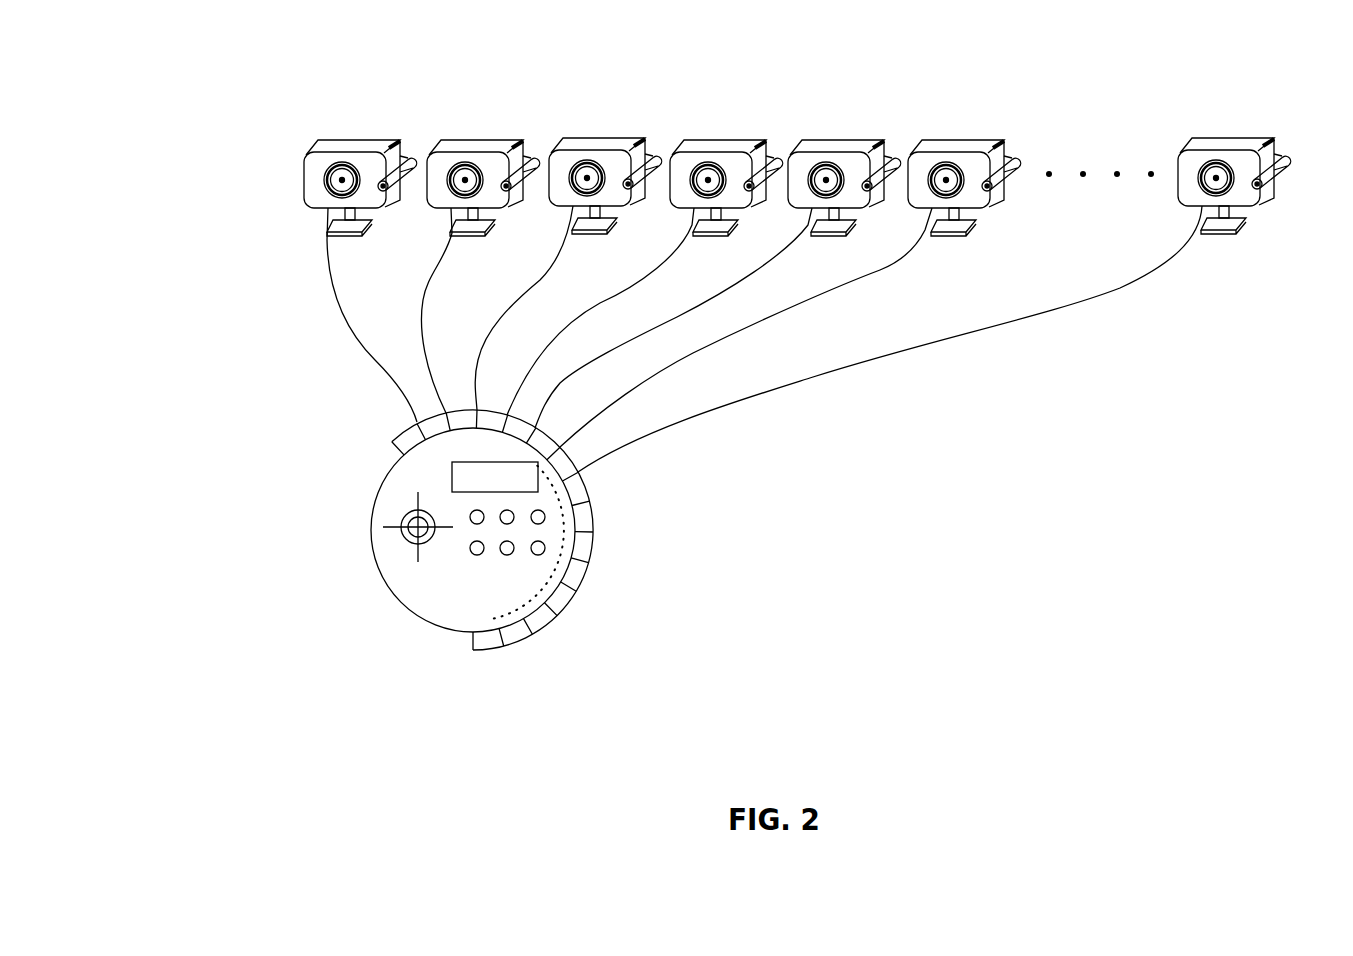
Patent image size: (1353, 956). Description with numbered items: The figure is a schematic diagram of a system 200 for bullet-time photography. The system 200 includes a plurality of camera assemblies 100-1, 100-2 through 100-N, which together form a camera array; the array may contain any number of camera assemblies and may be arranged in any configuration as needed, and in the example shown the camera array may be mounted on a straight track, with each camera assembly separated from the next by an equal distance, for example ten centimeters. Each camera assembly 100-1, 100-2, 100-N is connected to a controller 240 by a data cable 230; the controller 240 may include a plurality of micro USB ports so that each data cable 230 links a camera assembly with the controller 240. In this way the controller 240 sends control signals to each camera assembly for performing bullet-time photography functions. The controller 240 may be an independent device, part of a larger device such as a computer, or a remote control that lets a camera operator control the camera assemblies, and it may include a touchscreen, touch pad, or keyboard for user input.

The system 200 is at (785, 31).
The camera assembly 100-1 is at (360, 146).
The camera assembly 100-2 is at (483, 173).
The camera assembly 100-N is at (1234, 170).
The data cable 230 is at (355, 353).
The controller 240 is at (388, 590).